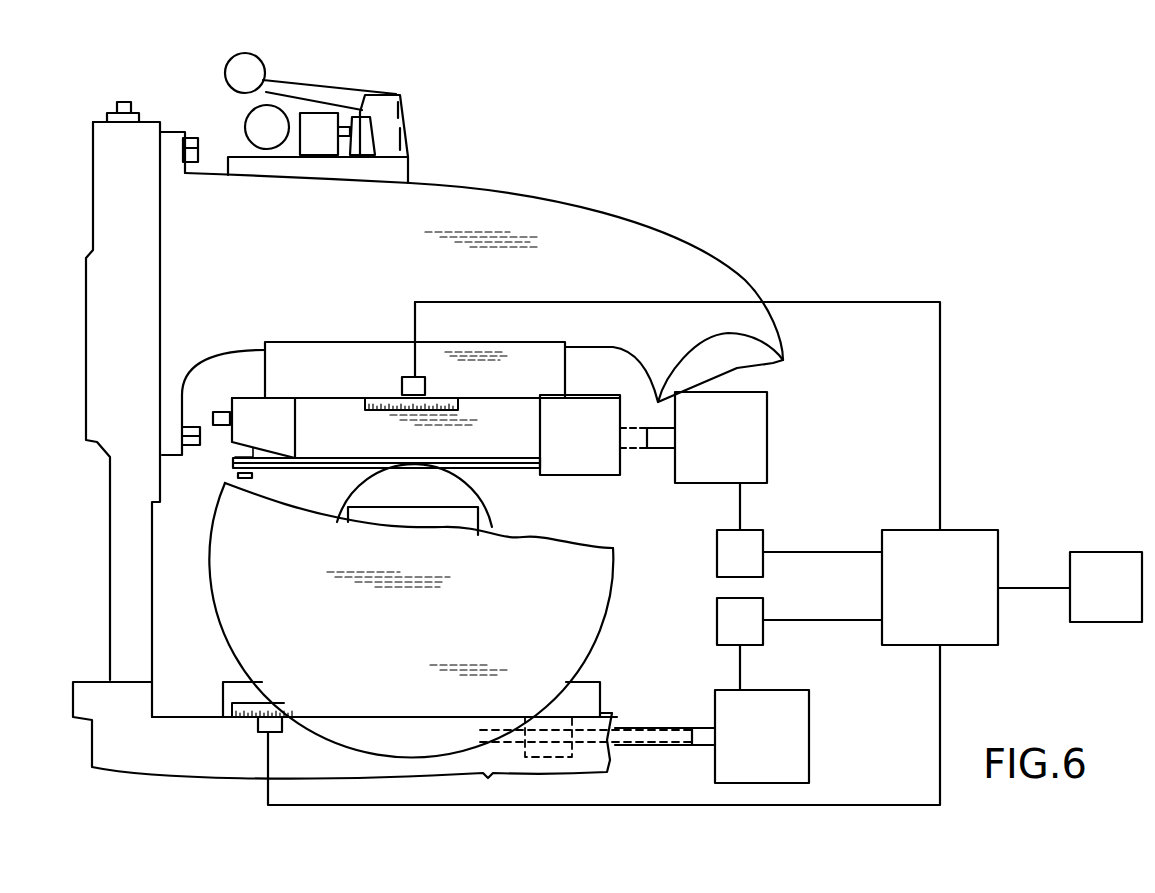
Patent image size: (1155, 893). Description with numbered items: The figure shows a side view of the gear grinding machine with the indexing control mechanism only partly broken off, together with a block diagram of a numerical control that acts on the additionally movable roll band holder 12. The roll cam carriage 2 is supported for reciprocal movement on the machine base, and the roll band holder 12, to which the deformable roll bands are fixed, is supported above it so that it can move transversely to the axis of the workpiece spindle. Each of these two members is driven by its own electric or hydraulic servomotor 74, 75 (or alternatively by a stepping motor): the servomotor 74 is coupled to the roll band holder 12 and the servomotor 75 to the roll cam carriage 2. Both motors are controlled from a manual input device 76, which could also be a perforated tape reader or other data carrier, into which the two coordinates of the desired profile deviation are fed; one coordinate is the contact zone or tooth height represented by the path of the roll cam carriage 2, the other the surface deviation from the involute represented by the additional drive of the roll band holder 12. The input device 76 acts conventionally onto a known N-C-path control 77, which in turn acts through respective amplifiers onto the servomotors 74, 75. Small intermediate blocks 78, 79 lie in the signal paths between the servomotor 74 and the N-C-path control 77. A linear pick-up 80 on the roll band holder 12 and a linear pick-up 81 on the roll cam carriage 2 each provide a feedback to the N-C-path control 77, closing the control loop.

The roll band holder 12 is at (267, 412).
The linear pick-up 80 is at (393, 403).
The servomotor 74 is at (752, 408).
The position sensor 78 is at (722, 547).
The position sensor 79 is at (722, 615).
The N-C-path control 77 is at (986, 555).
The manual input device 76 is at (1103, 560).
The servomotor 75 is at (793, 698).
The roll cam carriage 2 is at (237, 695).
The linear pick-up 81 is at (256, 711).